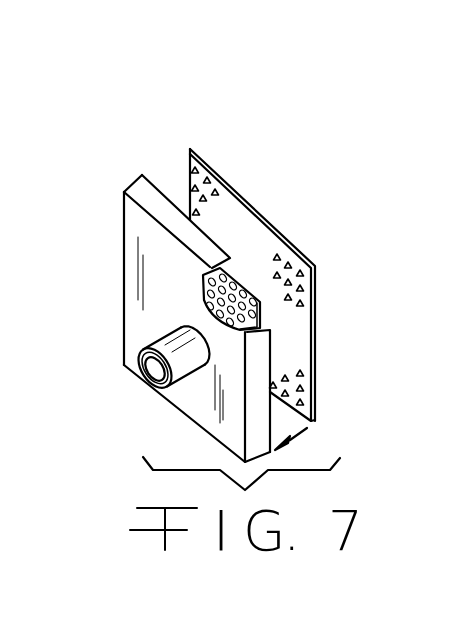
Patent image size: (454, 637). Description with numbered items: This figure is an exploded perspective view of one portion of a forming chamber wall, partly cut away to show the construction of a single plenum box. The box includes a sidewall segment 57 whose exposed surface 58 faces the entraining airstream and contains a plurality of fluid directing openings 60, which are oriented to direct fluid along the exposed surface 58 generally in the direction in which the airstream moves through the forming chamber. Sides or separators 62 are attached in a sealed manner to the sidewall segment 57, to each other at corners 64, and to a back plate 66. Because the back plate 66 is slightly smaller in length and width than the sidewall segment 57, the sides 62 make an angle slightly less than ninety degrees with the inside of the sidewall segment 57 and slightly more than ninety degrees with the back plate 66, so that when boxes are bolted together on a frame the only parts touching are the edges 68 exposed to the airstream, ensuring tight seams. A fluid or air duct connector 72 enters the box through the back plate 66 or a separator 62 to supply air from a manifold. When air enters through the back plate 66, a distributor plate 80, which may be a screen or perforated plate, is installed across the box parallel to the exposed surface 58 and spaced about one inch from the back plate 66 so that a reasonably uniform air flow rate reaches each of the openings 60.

The sidewall segment 57 is at (247, 231).
The exposed surface 58 is at (287, 235).
The fluid directing openings 60 is at (298, 303).
The sides or separators 62 is at (151, 193).
The corners 64 is at (131, 190).
The back plate 66 is at (137, 237).
The edges 68 is at (221, 170).
The fluid or air duct connector 72 is at (166, 380).
The distributor plate 80 is at (200, 288).